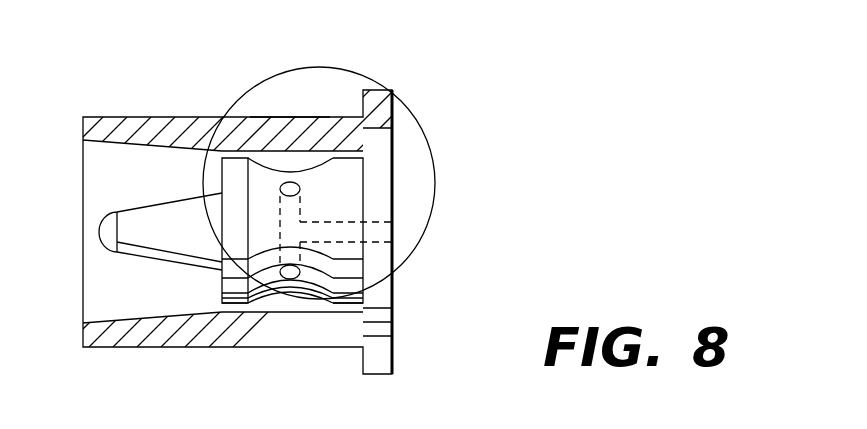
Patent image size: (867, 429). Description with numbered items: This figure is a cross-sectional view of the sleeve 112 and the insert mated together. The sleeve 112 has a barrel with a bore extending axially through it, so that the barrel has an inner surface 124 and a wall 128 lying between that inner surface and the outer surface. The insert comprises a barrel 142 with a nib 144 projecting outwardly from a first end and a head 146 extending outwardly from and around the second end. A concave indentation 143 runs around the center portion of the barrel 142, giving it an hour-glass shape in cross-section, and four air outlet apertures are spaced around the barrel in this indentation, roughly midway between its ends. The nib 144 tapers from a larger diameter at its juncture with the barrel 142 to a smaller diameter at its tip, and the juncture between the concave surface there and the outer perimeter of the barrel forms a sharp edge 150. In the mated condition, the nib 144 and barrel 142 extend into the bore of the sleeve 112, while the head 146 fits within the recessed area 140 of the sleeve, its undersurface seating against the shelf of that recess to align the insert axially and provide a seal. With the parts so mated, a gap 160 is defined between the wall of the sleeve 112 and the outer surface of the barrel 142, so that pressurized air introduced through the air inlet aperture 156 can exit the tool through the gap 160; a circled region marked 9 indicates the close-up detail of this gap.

The detail circle 9 is at (417, 118).
The sleeve 112 is at (132, 117).
The inner surface 124 is at (235, 150).
The wall 128 is at (275, 128).
The recessed area 140 is at (393, 92).
The barrel 142 is at (260, 298).
The concave indentation 143 is at (300, 283).
The nib 144 is at (157, 240).
The head 146 is at (378, 173).
The sharp edge 150 is at (220, 305).
The air inlet aperture 156 is at (382, 233).
The gap 160 is at (298, 160).